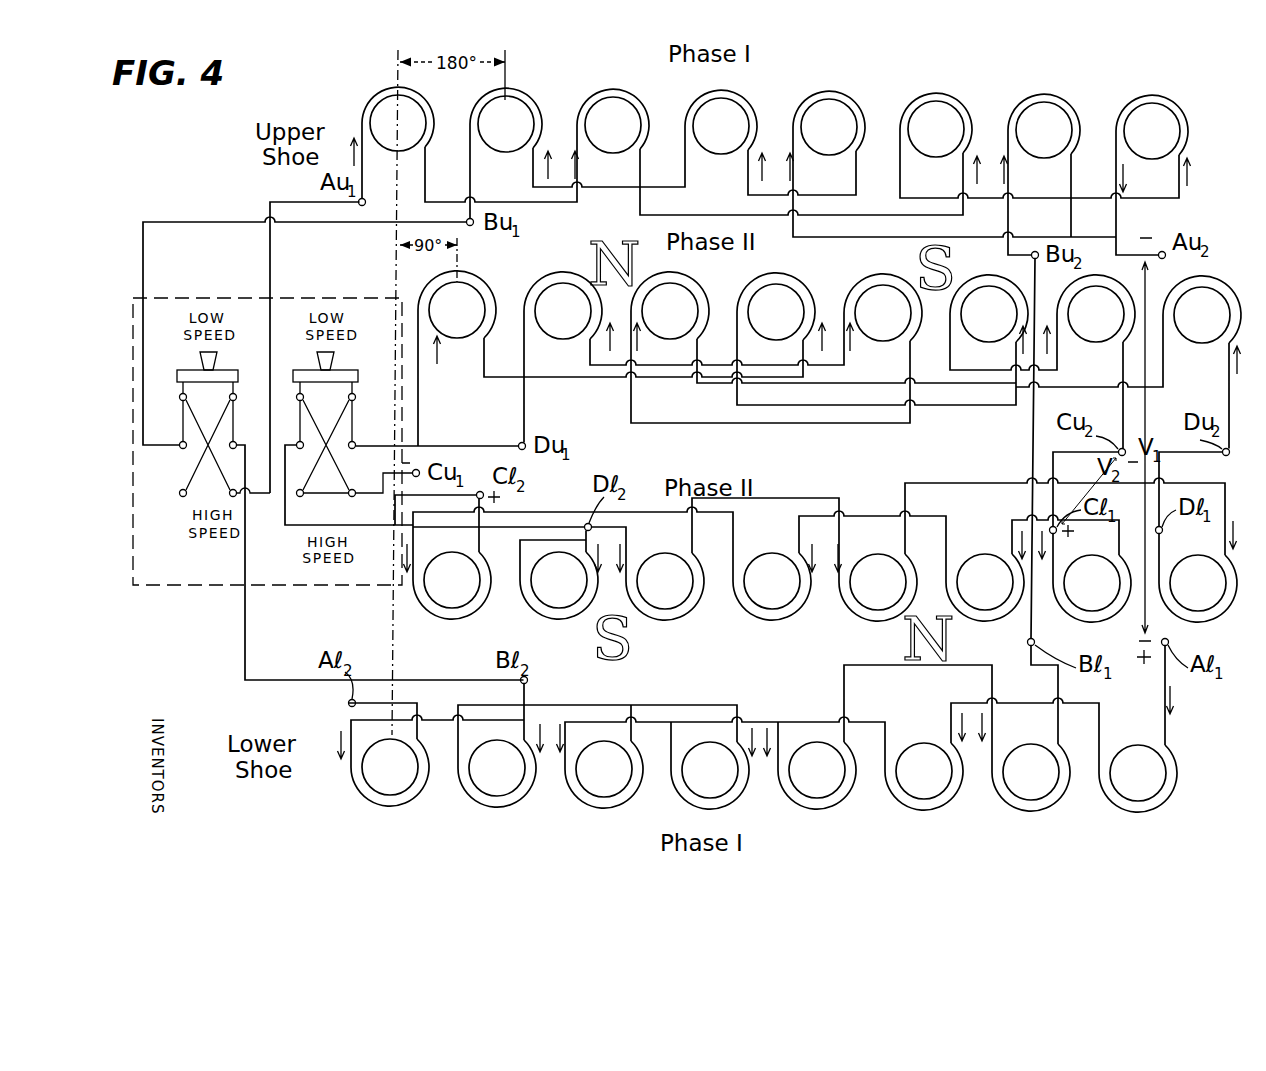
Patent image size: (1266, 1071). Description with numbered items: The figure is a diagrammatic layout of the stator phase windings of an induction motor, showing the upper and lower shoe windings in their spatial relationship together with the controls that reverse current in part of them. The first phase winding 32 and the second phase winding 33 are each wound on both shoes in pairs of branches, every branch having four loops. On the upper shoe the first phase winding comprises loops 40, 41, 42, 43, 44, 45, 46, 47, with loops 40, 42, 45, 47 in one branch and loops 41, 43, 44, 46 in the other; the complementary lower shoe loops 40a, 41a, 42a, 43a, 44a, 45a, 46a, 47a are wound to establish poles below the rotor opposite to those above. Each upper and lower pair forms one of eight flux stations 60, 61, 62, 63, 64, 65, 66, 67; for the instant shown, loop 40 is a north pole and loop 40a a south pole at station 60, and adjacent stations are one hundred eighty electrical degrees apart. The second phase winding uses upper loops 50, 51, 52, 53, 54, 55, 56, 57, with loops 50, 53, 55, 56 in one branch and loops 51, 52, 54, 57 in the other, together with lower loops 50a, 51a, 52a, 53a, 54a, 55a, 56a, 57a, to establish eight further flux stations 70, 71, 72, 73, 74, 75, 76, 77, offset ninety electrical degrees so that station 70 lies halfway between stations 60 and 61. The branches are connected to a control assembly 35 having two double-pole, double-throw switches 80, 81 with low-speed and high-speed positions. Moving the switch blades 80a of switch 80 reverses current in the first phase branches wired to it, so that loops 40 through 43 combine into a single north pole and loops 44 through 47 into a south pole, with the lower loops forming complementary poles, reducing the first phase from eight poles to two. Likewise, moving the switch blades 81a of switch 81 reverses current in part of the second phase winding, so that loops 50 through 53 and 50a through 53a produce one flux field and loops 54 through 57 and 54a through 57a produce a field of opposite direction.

The first phase winding 32 is at (368, 92).
The second phase winding 33 is at (417, 290).
The control assembly 35 is at (130, 352).
The winding loop 40 is at (406, 86).
The winding loop 41 is at (514, 87).
The winding loop 42 is at (621, 88).
The winding loop 43 is at (729, 89).
The winding loop 44 is at (837, 90).
The winding loop 45 is at (944, 92).
The winding loop 46 is at (1052, 93).
The winding loop 47 is at (1160, 94).
The lower winding loop 40a is at (384, 805).
The lower winding loop 41a is at (491, 806).
The lower winding loop 42a is at (598, 807).
The lower winding loop 43a is at (704, 808).
The lower winding loop 44a is at (811, 808).
The lower winding loop 45a is at (918, 809).
The lower winding loop 46a is at (1025, 810).
The lower winding loop 47a is at (1132, 811).
The winding loop 50 is at (461, 273).
The winding loop 51 is at (567, 274).
The winding loop 52 is at (674, 274).
The winding loop 53 is at (780, 275).
The winding loop 54 is at (884, 267).
The winding loop 55 is at (993, 277).
The winding loop 56 is at (1100, 277).
The winding loop 57 is at (1206, 278).
The lower winding loop 50a is at (448, 618).
The lower winding loop 51a is at (555, 618).
The lower winding loop 52a is at (661, 619).
The lower winding loop 53a is at (768, 619).
The lower winding loop 54a is at (874, 620).
The lower winding loop 55a is at (981, 620).
The lower winding loop 56a is at (1088, 621).
The lower winding loop 57a is at (1194, 621).
The flux station 60 is at (391, 445).
The flux station 61 is at (500, 446).
The flux station 62 is at (604, 447).
The flux station 63 is at (711, 448).
The flux station 64 is at (823, 448).
The flux station 65 is at (930, 450).
The flux station 66 is at (1037, 451).
The flux station 67 is at (1145, 452).
The flux station 70 is at (454, 445).
The flux station 71 is at (561, 445).
The flux station 72 is at (667, 446).
The flux station 73 is at (774, 446).
The flux station 74 is at (880, 447).
The flux station 75 is at (987, 448).
The flux station 76 is at (1094, 448).
The flux station 77 is at (1200, 449).
The double-pole, double-throw switch 80 is at (222, 360).
The switch blades 80a is at (179, 447).
The double-pole, double-throw switch 81 is at (343, 364).
The switch blades 81a is at (352, 400).